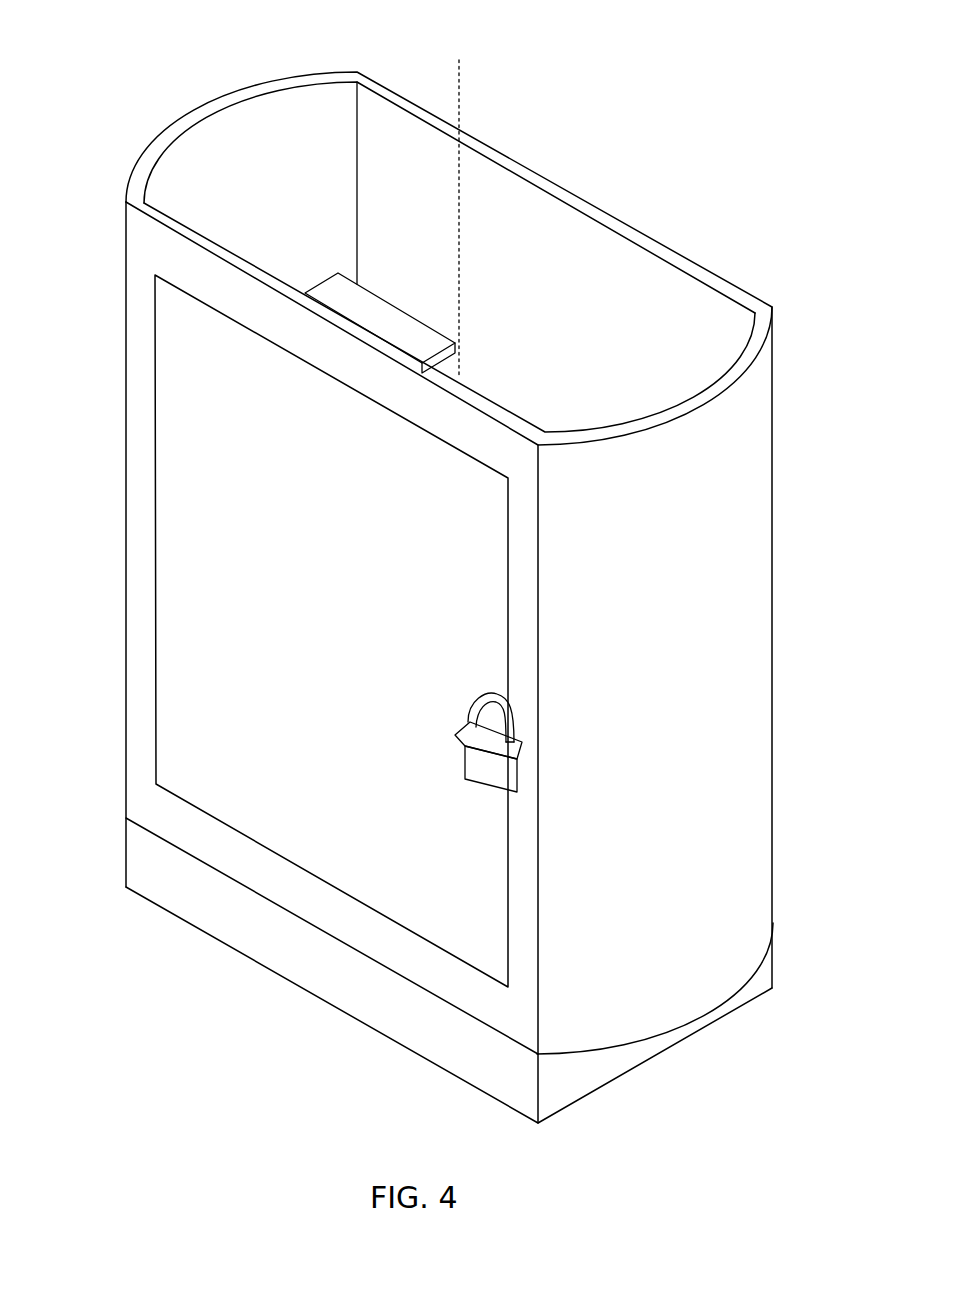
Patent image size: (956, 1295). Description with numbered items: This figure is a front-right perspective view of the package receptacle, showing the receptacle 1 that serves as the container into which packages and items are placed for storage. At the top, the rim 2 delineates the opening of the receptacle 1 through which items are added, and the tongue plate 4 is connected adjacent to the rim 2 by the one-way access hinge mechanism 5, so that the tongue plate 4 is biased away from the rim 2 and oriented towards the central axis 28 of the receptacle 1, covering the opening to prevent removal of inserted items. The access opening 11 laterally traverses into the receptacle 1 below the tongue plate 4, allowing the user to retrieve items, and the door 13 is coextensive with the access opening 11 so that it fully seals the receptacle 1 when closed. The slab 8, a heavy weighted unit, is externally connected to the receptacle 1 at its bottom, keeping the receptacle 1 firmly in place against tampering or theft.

The receptacle 1 is at (415, 66).
The rim 2 is at (663, 253).
The tongue plate 4 is at (363, 303).
The one-way access hinge mechanism 5 is at (553, 719).
The slab 8 is at (298, 968).
The access opening 11 is at (145, 390).
The door 13 is at (345, 638).
The central axis 28 is at (458, 113).